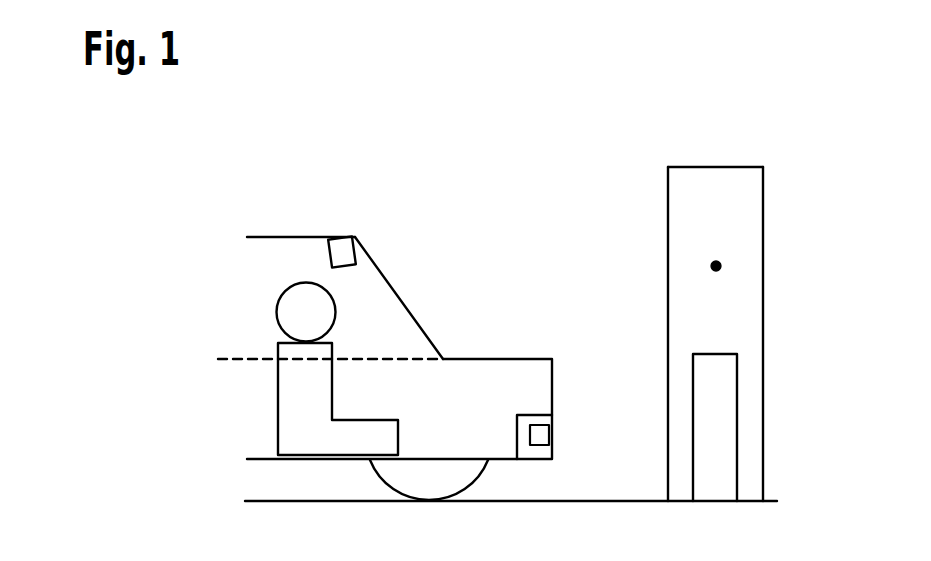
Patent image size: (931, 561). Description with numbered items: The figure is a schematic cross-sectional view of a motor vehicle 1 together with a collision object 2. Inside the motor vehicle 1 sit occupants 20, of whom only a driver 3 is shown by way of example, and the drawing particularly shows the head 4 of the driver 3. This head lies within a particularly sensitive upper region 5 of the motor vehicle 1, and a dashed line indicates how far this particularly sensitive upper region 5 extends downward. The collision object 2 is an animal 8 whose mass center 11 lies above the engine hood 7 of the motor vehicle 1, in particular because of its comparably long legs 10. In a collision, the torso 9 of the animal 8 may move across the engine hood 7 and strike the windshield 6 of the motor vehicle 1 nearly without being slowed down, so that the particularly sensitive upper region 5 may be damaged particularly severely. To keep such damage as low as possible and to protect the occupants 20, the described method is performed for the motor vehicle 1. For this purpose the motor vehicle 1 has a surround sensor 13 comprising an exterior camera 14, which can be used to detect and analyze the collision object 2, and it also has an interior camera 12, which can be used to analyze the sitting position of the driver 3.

The motor vehicle 1 is at (297, 235).
The collision object 2 is at (716, 295).
The driver 3 is at (280, 399).
The head 4 is at (277, 313).
The particularly sensitive upper region 5 is at (222, 281).
The windshield 6 is at (387, 277).
The engine hood 7 is at (495, 357).
The animal 8 is at (716, 334).
The torso 9 is at (683, 327).
The legs 10 is at (678, 407).
The mass center 11 is at (711, 266).
The interior camera 12 is at (343, 250).
The surround sensor 13 is at (535, 457).
The exterior camera 14 is at (543, 435).
The occupants 20 is at (278, 425).